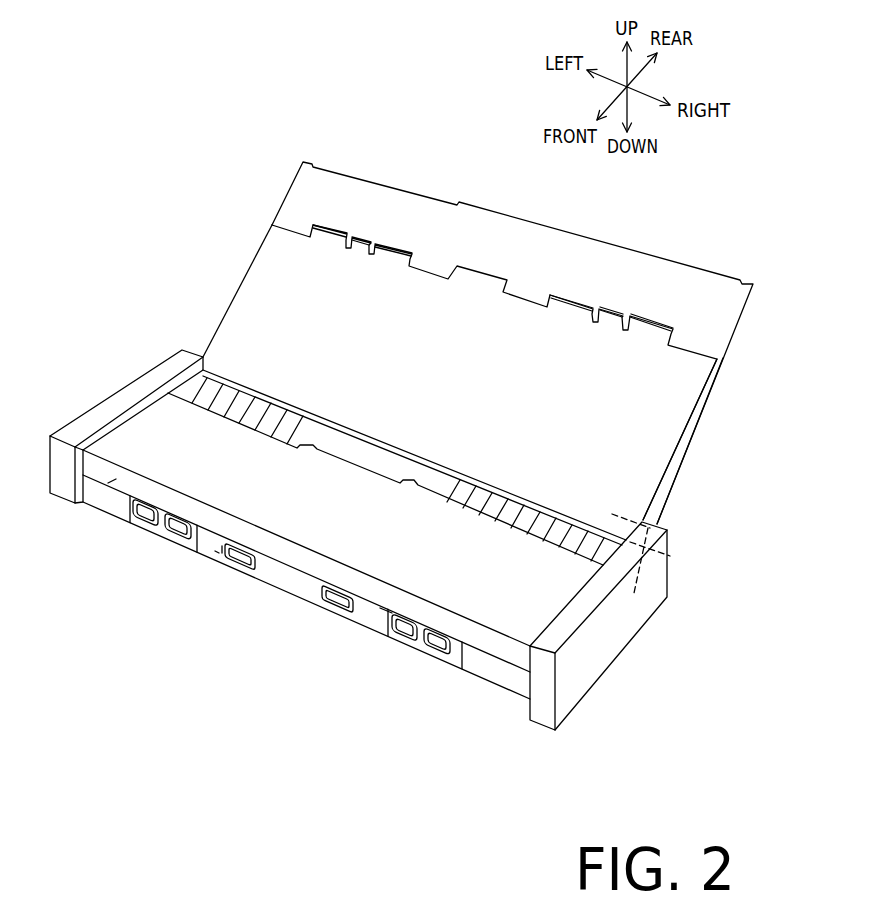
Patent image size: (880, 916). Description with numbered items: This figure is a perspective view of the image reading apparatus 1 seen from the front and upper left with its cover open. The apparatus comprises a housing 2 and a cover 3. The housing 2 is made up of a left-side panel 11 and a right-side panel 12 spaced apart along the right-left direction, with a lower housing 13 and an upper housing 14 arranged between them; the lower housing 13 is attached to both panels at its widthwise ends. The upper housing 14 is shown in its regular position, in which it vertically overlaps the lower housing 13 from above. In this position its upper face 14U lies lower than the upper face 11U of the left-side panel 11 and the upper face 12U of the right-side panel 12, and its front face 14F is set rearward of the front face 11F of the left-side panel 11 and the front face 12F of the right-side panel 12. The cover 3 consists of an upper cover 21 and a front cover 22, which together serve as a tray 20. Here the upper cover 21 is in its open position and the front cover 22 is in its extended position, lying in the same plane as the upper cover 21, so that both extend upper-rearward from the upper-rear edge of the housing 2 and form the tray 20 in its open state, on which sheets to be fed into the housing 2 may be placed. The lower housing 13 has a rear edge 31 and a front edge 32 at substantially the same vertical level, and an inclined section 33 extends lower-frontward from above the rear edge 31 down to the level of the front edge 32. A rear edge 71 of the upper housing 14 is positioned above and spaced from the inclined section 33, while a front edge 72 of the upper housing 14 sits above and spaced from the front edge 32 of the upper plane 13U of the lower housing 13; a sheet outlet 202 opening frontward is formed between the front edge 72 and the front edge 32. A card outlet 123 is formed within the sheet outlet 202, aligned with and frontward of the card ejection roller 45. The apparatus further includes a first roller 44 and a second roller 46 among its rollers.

The image reading apparatus 1 is at (318, 825).
The housing 2 is at (271, 599).
The cover 3 is at (270, 205).
The left-side panel 11 is at (73, 421).
The front face of the left-side panel 11F is at (58, 494).
The upper face of the left-side panel 11U is at (168, 367).
The right-side panel 12 is at (621, 640).
The front surface of right side wall 12F is at (540, 712).
The upper face of the right-side panel 12U is at (668, 529).
The lower housing 13 is at (232, 395).
The upper plane of the lower housing 13U is at (377, 452).
The upper housing 14 is at (156, 423).
The front face of the upper housing 14F is at (227, 524).
The upper face of the upper housing 14U is at (296, 456).
The tray 20 is at (432, 122).
The upper cover 21 is at (347, 190).
The front cover 22 is at (388, 283).
The rear edge of the lower housing 31 is at (672, 548).
The front edge of the lower housing 32 is at (112, 480).
The inclined section 33 is at (580, 527).
The first roller 44 is at (237, 558).
The card ejection roller 45 is at (427, 662).
The second roller 46 is at (169, 538).
The rear edge of the upper housing 71 is at (187, 398).
The front edge of the upper housing 72 is at (222, 546).
The card outlet 123 is at (383, 616).
The sheet outlet 202 is at (215, 551).